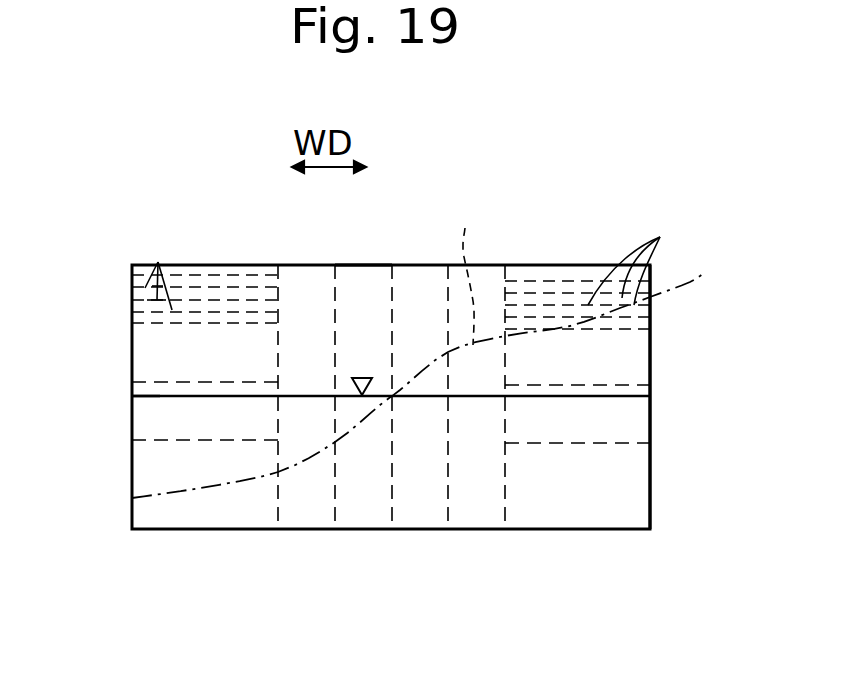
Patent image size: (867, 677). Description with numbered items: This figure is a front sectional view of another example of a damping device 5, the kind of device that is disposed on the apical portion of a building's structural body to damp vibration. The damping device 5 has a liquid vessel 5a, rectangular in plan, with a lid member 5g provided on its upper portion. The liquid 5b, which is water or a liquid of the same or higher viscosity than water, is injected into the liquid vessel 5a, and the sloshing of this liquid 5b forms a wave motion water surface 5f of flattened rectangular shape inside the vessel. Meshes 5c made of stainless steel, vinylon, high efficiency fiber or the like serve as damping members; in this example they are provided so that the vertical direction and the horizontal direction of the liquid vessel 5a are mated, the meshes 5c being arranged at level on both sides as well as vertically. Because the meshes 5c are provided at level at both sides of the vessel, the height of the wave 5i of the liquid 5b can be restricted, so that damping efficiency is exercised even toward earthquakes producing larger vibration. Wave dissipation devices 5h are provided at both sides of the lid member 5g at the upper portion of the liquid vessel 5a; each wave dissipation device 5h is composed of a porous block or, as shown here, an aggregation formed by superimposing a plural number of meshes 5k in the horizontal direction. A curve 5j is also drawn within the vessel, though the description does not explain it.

The damping device 5 is at (538, 212).
The liquid vessel 5a is at (651, 345).
The liquid 5b is at (603, 397).
The mesh 5c is at (163, 382).
The wave motion water surface 5f is at (142, 396).
The lid member 5g is at (372, 264).
The wave dissipation device 5h is at (200, 266).
The wave 5i is at (467, 268).
The temperature distribution curve 5j is at (435, 372).
The mesh 5k is at (158, 262).